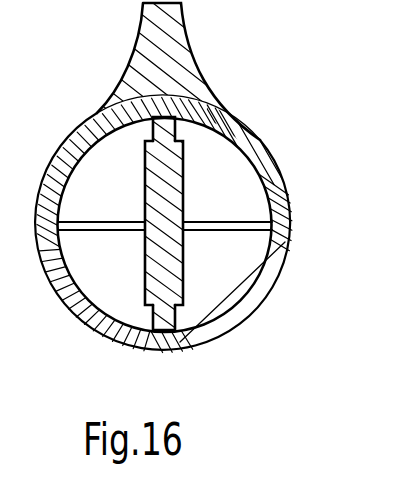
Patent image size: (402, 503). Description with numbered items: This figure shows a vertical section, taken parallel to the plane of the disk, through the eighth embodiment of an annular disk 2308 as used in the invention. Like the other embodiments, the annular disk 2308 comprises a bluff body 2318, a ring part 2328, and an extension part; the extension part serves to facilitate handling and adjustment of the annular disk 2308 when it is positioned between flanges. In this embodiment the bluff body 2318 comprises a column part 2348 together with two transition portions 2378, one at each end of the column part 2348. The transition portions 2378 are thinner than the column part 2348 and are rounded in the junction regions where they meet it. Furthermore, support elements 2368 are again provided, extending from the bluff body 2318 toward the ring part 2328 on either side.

The annular disk 2308 is at (108, 78).
The bluff body 2318 is at (143, 178).
The annular housing wall 2328 is at (271, 170).
The column part 2348 is at (187, 156).
The transition portions 2378 is at (176, 118).
The support elements 2368 is at (252, 232).